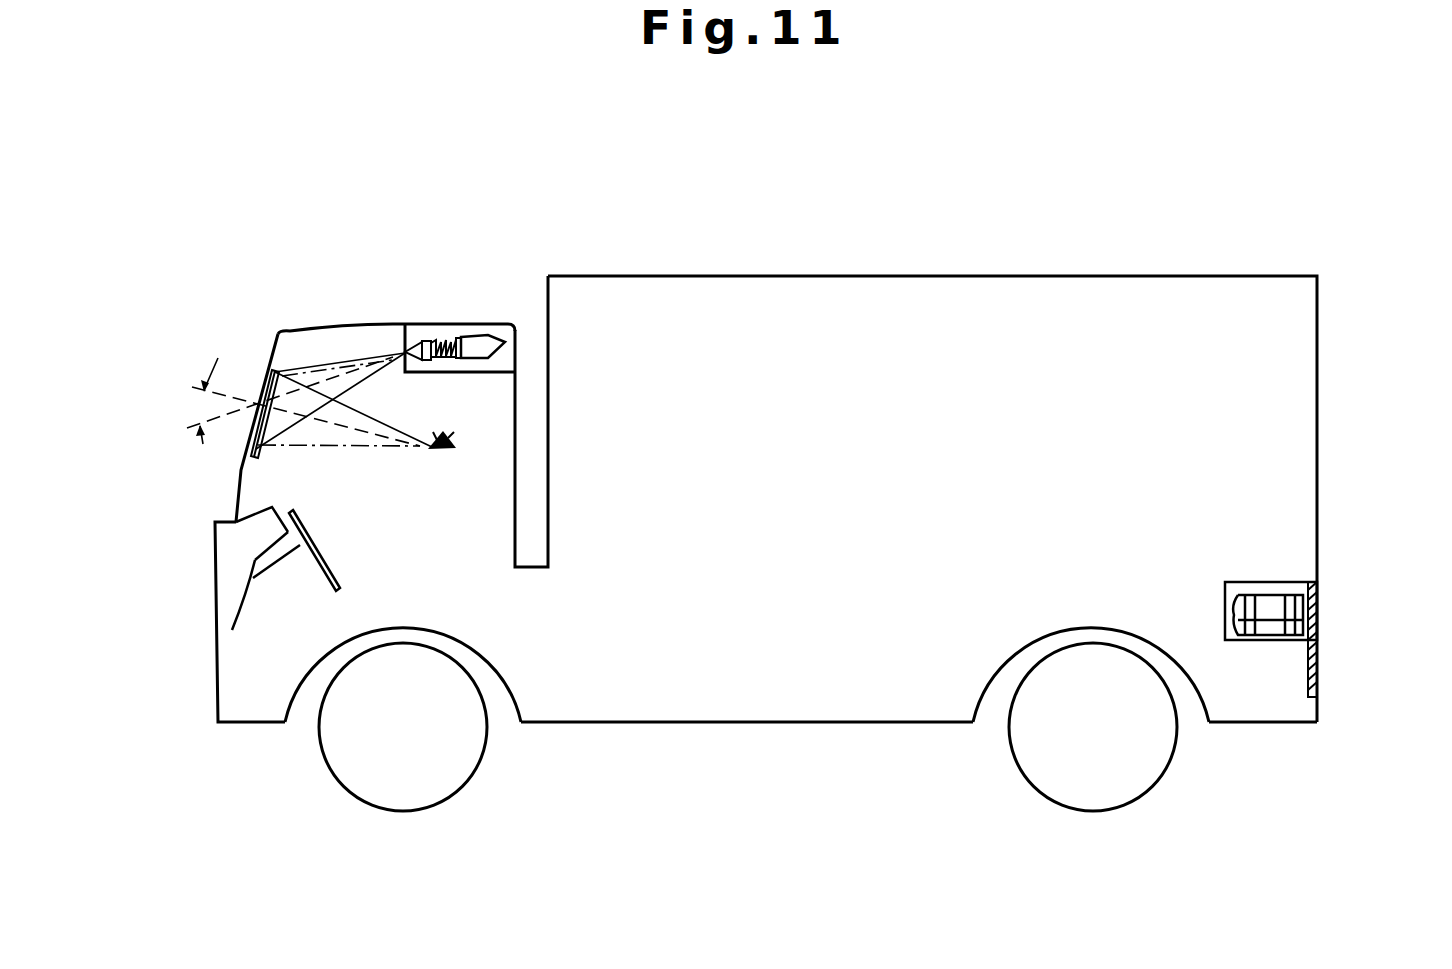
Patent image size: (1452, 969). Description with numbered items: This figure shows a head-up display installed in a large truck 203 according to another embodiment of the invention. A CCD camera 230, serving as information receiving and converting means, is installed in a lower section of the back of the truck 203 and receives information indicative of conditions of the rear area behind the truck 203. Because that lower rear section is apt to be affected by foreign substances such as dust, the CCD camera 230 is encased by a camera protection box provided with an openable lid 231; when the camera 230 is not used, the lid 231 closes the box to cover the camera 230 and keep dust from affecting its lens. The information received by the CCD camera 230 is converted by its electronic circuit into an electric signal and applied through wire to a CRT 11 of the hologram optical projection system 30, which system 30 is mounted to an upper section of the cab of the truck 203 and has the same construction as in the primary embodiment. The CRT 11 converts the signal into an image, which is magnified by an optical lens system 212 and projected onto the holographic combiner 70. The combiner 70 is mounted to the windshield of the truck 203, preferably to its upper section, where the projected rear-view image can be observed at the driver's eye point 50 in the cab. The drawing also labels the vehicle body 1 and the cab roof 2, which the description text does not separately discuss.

The vehicle 1 is at (243, 476).
The roof 2 is at (342, 327).
The hologram optical projection system 30 is at (413, 327).
The optical lens system 212 is at (455, 337).
The CRT 11 is at (490, 336).
The holographic combiner 70 is at (255, 435).
The driver eye point 50 is at (451, 452).
The large truck 203 is at (1068, 290).
The CCD camera 230 is at (1318, 578).
The openable lid 231 is at (1318, 627).